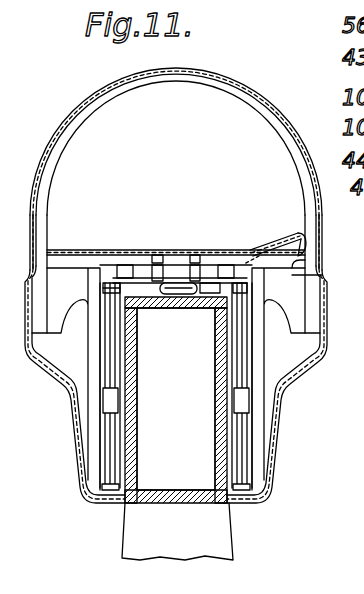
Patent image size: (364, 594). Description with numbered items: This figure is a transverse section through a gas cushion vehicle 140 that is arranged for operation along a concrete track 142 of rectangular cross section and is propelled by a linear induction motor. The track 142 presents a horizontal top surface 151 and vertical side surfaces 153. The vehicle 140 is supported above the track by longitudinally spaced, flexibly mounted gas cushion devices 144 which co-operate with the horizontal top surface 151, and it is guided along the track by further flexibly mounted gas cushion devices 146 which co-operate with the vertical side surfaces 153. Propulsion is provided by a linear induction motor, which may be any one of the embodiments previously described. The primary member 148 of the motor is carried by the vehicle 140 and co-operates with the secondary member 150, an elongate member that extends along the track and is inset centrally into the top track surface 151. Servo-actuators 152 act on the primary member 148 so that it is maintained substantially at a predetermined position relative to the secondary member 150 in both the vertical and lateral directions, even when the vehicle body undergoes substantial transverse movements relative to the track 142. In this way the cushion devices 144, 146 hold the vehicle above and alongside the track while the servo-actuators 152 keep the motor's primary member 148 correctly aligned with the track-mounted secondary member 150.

The gas cushion vehicle 140 is at (249, 63).
The concrete track 142 is at (126, 497).
The gas cushion devices 144 is at (210, 283).
The gas cushion devices 146 is at (118, 372).
The primary member 148 is at (172, 271).
The secondary member 150 is at (140, 312).
The horizontal top surface 151 is at (140, 350).
The servo-actuators 152 is at (150, 270).
The vertical side surfaces 153 is at (138, 405).